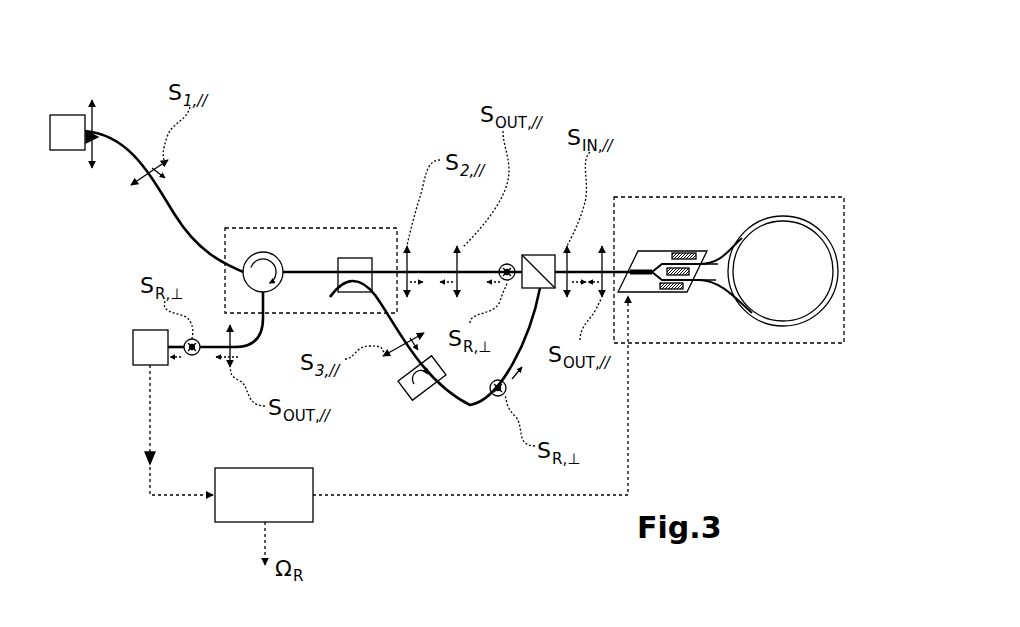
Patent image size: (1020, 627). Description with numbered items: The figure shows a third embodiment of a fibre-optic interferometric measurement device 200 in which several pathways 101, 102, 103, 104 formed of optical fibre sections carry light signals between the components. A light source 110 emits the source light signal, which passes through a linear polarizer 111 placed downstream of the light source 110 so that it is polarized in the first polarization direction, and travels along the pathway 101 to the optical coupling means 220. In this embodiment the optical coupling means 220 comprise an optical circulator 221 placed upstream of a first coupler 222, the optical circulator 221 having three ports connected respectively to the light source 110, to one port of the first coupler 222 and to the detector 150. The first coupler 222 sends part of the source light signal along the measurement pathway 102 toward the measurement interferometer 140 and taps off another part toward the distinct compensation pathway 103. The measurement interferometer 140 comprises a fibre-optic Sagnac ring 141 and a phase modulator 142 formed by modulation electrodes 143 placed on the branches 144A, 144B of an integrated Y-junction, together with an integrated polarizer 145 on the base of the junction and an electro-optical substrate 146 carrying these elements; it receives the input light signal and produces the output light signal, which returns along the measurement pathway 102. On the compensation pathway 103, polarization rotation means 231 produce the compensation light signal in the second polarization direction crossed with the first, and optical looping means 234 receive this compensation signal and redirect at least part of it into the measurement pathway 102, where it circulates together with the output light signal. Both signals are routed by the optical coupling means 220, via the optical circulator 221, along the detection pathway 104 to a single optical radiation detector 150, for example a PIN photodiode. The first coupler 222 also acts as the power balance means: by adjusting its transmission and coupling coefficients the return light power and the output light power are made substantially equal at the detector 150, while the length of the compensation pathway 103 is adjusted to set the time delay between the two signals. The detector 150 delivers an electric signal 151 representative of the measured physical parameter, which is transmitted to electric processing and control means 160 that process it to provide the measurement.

The pathway 101 is at (170, 208).
The measurement pathway 102 is at (430, 271).
The compensation pathway 103 is at (470, 408).
The detection pathway 104 is at (216, 351).
The light source 110 is at (70, 112).
The linear polarizer 111 is at (95, 101).
The measurement interferometer 140 is at (790, 347).
The fibre-optic Sagnac ring 141 is at (783, 216).
The phase modulator 142 is at (696, 269).
The modulation electrodes 143 is at (719, 282).
The branch of the Y-junction 144A is at (672, 254).
The branch of the Y-junction 144B is at (657, 292).
The integrated polarizer 145 is at (636, 293).
The electro-optical substrate 146 is at (652, 259).
The detector 150 is at (133, 341).
The electric signal 151 is at (149, 462).
The electric processing and control means 160 is at (235, 522).
The interferometric measurement device 200 is at (148, 532).
The optical coupling means 220 is at (313, 227).
The optical circulator 221 is at (263, 252).
The first coupler 222 is at (357, 258).
The polarization rotation means 231 is at (405, 398).
The optical looping means 234 is at (540, 255).